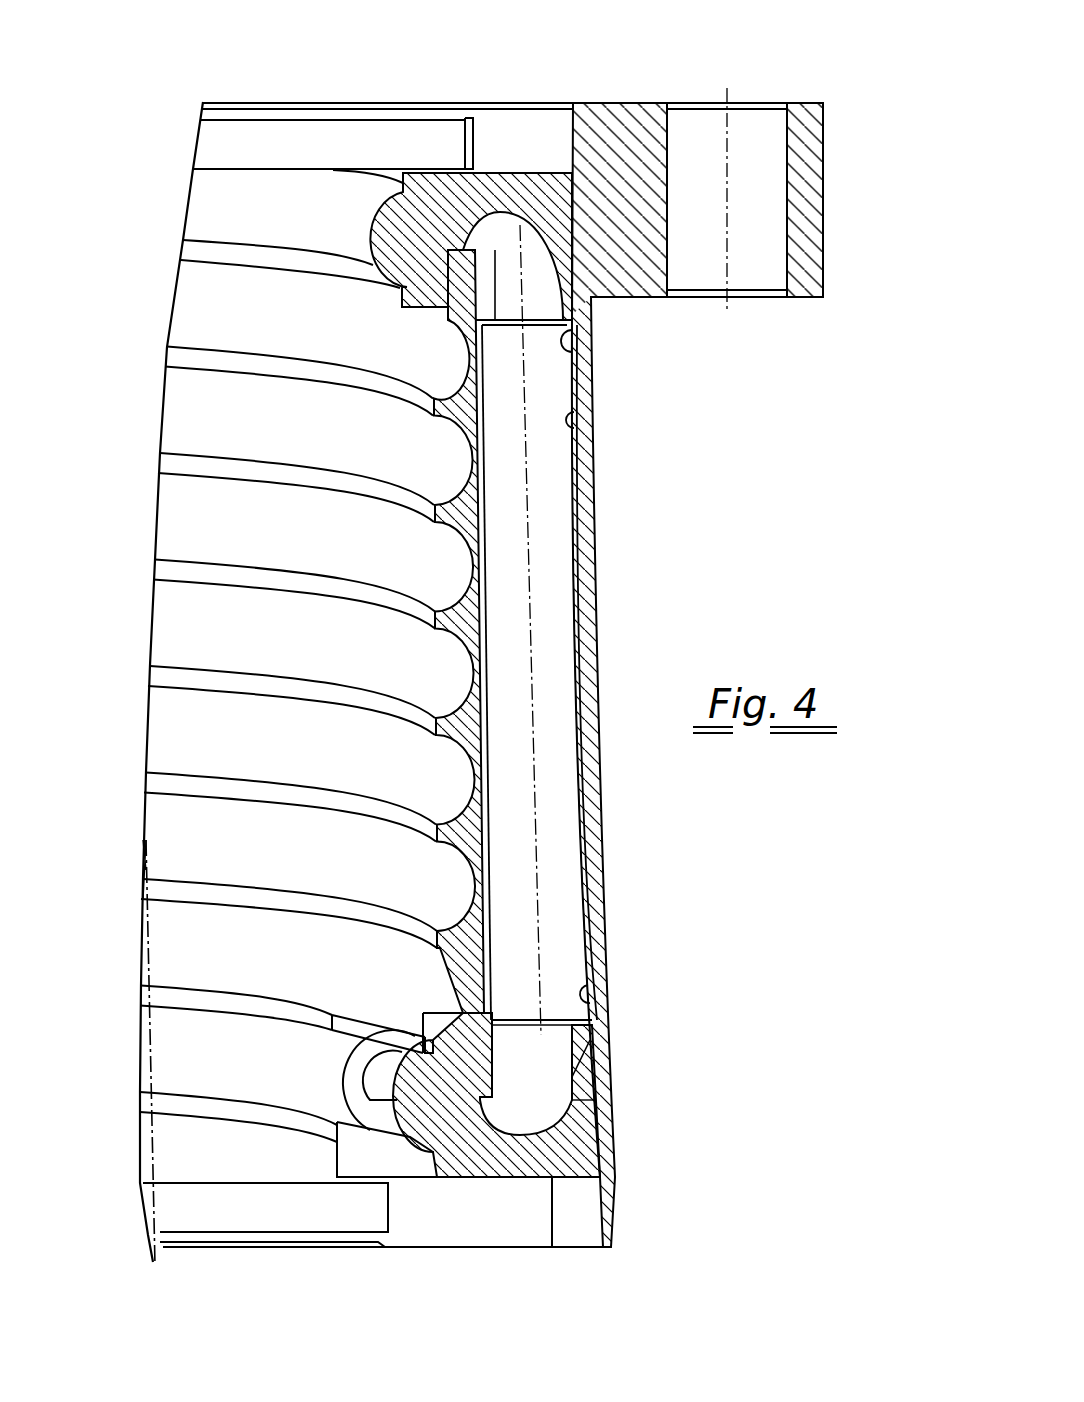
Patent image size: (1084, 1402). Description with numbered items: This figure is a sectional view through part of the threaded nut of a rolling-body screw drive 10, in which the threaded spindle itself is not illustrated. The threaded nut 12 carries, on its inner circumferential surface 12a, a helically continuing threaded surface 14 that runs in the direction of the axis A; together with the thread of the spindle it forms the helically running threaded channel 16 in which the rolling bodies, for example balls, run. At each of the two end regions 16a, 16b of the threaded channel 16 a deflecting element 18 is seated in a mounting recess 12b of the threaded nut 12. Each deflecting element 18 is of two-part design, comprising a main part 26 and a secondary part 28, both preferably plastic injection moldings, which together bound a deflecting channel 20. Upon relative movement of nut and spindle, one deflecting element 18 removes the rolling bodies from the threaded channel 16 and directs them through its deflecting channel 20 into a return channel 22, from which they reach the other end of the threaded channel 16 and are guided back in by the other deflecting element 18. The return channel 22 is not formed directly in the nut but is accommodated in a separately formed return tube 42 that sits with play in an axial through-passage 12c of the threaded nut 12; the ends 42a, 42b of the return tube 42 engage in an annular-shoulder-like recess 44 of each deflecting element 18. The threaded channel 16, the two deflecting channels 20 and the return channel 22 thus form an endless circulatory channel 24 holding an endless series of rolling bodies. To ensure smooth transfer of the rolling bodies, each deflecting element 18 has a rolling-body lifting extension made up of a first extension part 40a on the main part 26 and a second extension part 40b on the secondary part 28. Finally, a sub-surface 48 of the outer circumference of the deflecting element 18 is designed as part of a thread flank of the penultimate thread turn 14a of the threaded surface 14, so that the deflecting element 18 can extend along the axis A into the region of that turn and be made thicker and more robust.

The rolling-body screw drive 10 is at (150, 152).
The threaded nut 12 is at (618, 102).
The inner circumferential surface 12a is at (195, 410).
The recess 12b is at (598, 1107).
The axial through-passage 12c is at (575, 410).
The threaded surface 14 is at (170, 513).
The penultimate thread turn 14a is at (172, 931).
The threaded channel 16 is at (170, 633).
The end region of the threaded channel 16a is at (308, 200).
The end region of the threaded channel 16b is at (306, 1087).
The deflecting element 18 is at (446, 193).
The deflecting channel 20 is at (513, 240).
The return channel 22 is at (567, 863).
The endless circulatory channel 24 is at (558, 538).
The main part 26 is at (601, 1148).
The secondary part 28 is at (560, 1043).
The first extension part 40a is at (383, 1105).
The second extension part 40b is at (357, 1063).
The return tube 42 is at (580, 675).
The end of the return tube 42a is at (578, 352).
The end of the return tube 42b is at (587, 992).
The recess 44 is at (497, 1020).
The sub-surface 48 is at (440, 1014).
The axis A is at (150, 995).